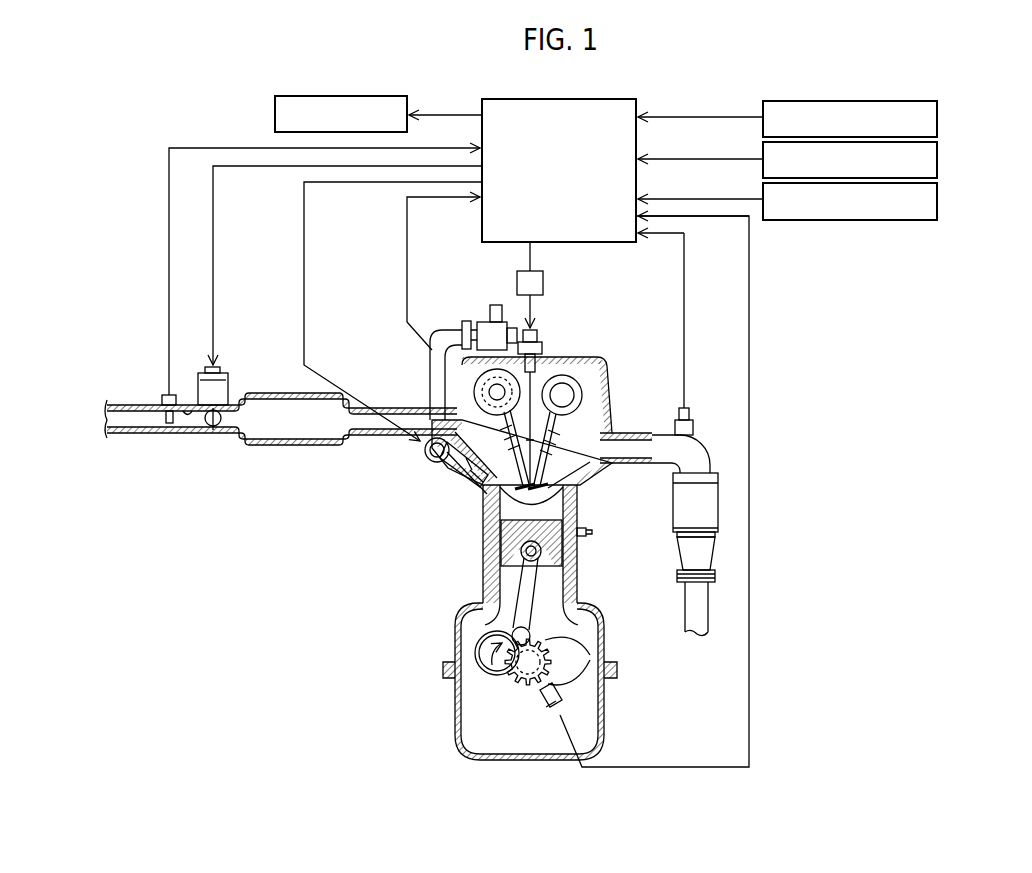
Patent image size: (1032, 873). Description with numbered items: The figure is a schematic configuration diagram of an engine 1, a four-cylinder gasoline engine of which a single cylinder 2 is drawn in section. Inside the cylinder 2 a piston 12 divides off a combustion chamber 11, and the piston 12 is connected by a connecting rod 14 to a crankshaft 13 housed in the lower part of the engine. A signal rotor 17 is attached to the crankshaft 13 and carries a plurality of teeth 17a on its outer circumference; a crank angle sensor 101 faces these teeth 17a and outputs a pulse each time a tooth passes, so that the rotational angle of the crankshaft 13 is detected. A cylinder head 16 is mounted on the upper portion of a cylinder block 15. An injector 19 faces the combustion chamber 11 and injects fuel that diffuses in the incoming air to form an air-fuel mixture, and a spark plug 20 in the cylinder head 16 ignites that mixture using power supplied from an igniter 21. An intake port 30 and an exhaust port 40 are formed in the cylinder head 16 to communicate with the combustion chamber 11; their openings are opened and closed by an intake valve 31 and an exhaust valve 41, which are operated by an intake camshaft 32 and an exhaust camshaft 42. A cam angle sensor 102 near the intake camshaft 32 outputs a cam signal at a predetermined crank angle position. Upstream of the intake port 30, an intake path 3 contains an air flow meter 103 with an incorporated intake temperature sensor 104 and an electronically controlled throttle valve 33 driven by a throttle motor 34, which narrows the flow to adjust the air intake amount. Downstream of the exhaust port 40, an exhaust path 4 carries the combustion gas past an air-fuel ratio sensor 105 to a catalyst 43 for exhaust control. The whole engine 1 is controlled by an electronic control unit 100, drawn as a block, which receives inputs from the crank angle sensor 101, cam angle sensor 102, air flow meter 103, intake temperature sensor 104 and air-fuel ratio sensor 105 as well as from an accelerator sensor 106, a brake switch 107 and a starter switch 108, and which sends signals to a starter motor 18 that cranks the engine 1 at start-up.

The engine 1 is at (358, 591).
The cylinder 2 is at (577, 594).
The intake path 3 is at (372, 436).
The exhaust path 4 is at (630, 452).
The combustion chamber 11 is at (565, 508).
The piston 12 is at (487, 556).
The crankshaft 13 is at (458, 756).
The connecting rod 14 is at (484, 594).
The cylinder block 15 is at (582, 537).
The cylinder head 16 is at (607, 396).
The signal rotor 17 is at (518, 686).
The teeth 17a is at (592, 658).
The starter motor 18 is at (275, 113).
The injector 19 is at (452, 472).
The spark plug 20 is at (496, 494).
The igniter 21 is at (544, 284).
The intake port 30 is at (435, 438).
The intake valve 31 is at (478, 500).
The intake camshaft 32 is at (496, 388).
The throttle valve 33 is at (218, 433).
The throttle motor 34 is at (229, 386).
The exhaust port 40 is at (600, 440).
The exhaust valve 41 is at (587, 462).
The exhaust camshaft 42 is at (575, 383).
The catalyst 43 is at (673, 520).
The electronic control unit 100 is at (598, 99).
The crank angle sensor 101 is at (560, 704).
The cam angle sensor 102 is at (434, 345).
The air flow meter 103 is at (165, 395).
The intake temperature sensor 104 is at (189, 402).
The air-fuel ratio sensor 105 is at (691, 412).
The accelerator sensor 106 is at (958, 117).
The brake switch 107 is at (958, 159).
The starter switch 108 is at (958, 200).